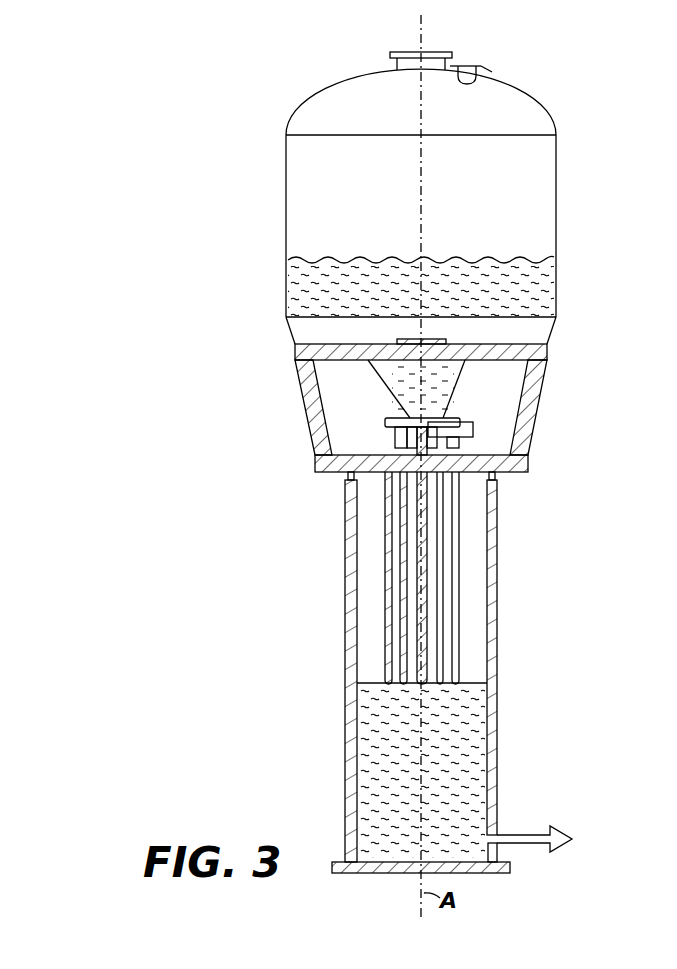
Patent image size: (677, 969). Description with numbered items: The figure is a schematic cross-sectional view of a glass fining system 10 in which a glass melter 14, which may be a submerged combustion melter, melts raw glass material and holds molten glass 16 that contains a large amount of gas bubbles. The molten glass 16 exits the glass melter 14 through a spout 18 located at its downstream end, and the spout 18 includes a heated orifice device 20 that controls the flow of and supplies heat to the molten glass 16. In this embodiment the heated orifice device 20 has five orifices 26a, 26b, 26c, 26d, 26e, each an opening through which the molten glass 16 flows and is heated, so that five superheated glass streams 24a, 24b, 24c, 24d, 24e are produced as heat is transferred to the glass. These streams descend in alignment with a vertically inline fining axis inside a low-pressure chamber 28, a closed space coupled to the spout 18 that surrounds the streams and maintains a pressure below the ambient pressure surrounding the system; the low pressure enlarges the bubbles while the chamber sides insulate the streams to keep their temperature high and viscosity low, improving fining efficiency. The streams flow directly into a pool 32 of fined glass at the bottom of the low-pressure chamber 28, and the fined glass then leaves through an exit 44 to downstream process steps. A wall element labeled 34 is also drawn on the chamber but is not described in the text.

The glass fining system 10 is at (252, 90).
The glass melter 14 is at (557, 137).
The molten glass 16 is at (493, 278).
The spout 18 is at (448, 385).
The heated orifice device 20 is at (420, 440).
The superheated glass stream 24a is at (385, 529).
The superheated glass stream 24b is at (402, 578).
The superheated glass stream 24c is at (412, 615).
The superheated glass stream 24d is at (440, 590).
The superheated glass stream 24e is at (458, 494).
The orifice 26a is at (390, 455).
The orifice 26b is at (395, 445).
The orifice 26c is at (422, 440).
The orifice 26d is at (466, 440).
The orifice 26e is at (470, 452).
The low-pressure chamber 28 is at (352, 690).
The pool of fined glass 32 is at (380, 770).
The vessel wall 34 is at (497, 642).
The exit 44 is at (500, 834).